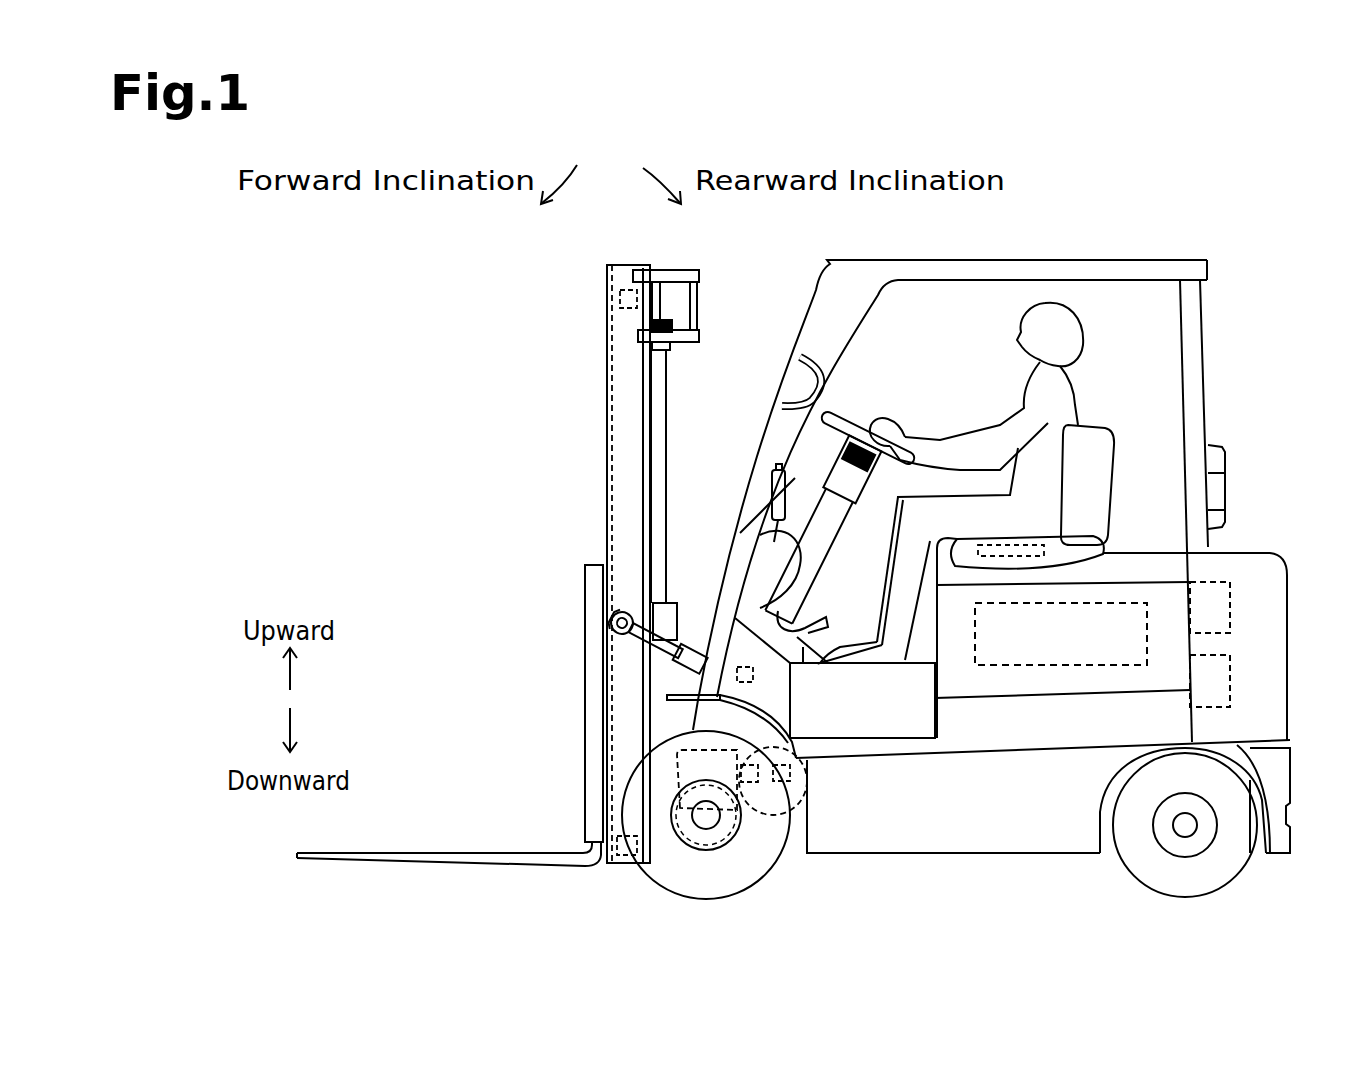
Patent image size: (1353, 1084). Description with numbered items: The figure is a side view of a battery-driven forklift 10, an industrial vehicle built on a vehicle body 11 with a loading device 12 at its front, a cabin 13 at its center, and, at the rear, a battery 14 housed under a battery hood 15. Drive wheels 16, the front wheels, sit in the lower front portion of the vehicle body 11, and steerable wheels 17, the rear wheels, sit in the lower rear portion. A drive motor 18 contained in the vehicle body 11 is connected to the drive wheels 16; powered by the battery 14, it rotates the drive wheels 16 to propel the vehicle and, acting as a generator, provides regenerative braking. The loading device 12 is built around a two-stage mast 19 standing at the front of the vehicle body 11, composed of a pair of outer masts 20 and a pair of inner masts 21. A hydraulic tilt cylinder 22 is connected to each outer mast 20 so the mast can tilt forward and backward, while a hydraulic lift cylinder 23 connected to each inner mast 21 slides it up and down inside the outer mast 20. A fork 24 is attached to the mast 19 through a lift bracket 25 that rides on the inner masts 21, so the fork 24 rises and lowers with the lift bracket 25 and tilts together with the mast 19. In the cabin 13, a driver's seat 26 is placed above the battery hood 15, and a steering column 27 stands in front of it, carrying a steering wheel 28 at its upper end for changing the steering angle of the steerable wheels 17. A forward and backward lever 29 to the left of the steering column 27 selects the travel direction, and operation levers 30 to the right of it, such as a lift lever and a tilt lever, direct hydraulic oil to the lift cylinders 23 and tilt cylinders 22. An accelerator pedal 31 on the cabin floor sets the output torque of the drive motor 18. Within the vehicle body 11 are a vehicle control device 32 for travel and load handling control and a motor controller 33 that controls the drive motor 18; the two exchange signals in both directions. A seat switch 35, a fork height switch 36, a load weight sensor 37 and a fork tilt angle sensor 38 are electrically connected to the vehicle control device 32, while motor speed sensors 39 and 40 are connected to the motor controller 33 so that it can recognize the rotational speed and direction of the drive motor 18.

The forklift 10 is at (1171, 190).
The vehicle body 11 is at (957, 858).
The loading device 12 is at (427, 350).
The cabin 13 is at (981, 289).
The battery 14 is at (1040, 666).
The battery hood 15 is at (1155, 566).
The drive wheels (front wheels) 16 is at (703, 898).
The steerable wheels (rear wheels) 17 is at (1180, 895).
The drive motor 18 is at (796, 783).
The mast 19 is at (531, 325).
The outer mast 20 is at (623, 377).
The inner mast 21 is at (612, 337).
The tilt cylinder 22 is at (690, 637).
The lift cylinder 23 is at (667, 405).
The fork 24 is at (461, 862).
The lift bracket 25 is at (598, 722).
The driver's seat 26 is at (1113, 460).
The steering column 27 is at (826, 565).
The steering wheel 28 is at (878, 407).
The forward and backward lever 29 is at (868, 487).
The operation lever 30 is at (828, 452).
The accelerator pedal 31 is at (816, 665).
The vehicle control device 32 is at (1232, 622).
The motor controller 33 is at (1232, 692).
The seat switch 35 is at (1025, 543).
The fork height switch 36 is at (619, 298).
The load weight sensor 37 is at (624, 856).
The fork tilt angle sensor 38 is at (756, 683).
The motor speed sensor 39 is at (728, 803).
The motor speed sensor 40 is at (806, 803).